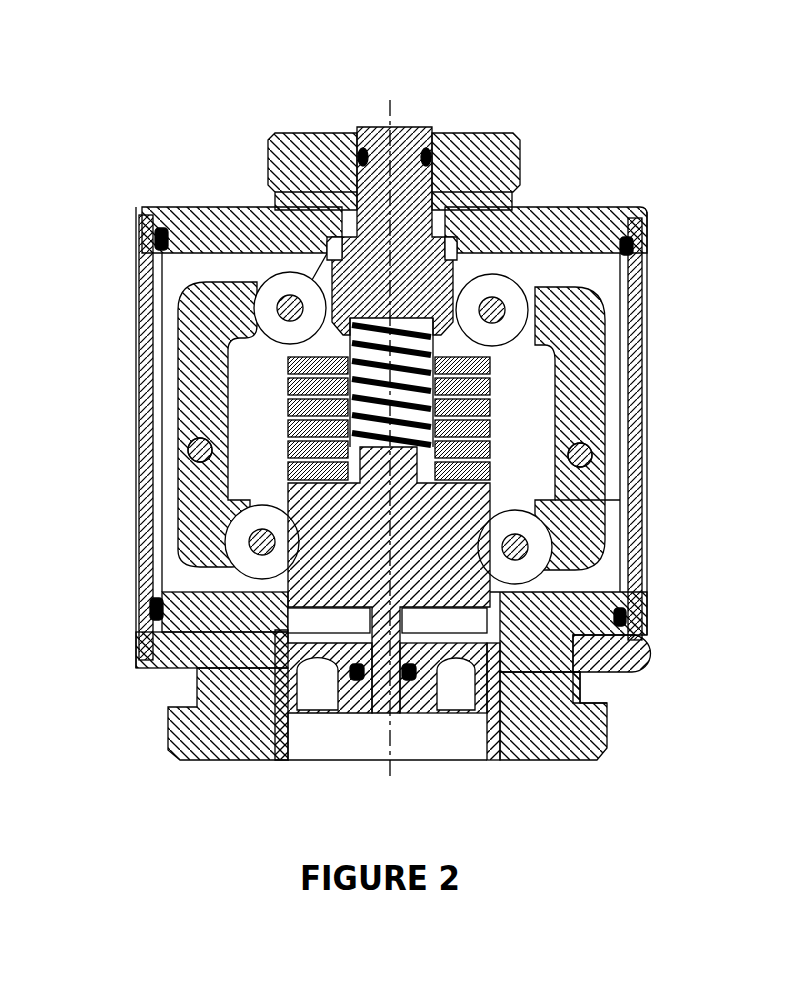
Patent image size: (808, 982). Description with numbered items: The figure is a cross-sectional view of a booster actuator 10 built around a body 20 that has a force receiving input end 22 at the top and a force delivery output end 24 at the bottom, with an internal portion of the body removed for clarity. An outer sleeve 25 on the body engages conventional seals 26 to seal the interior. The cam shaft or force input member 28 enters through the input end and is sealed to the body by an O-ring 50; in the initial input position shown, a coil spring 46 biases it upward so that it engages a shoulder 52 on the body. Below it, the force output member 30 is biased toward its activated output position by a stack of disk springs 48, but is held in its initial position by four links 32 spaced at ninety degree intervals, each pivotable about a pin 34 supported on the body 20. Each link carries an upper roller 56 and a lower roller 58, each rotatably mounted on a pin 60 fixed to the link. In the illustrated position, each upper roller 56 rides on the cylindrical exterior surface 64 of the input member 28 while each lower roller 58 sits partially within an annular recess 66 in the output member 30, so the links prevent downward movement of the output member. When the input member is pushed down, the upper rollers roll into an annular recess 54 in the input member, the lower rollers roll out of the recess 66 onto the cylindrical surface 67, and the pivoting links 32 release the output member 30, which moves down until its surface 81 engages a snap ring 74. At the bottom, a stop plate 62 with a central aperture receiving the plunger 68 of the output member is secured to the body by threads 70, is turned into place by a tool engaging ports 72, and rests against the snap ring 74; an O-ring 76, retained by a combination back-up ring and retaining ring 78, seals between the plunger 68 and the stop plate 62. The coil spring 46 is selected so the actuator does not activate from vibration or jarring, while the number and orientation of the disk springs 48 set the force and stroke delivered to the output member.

The actuator 10 is at (647, 108).
The body 20 is at (195, 207).
The force receiving input end 22 is at (610, 213).
The force delivery output end 24 is at (600, 762).
The outer sleeve 25 is at (643, 477).
The seals 26 is at (645, 623).
The force input member 28 is at (435, 188).
The force output member 30 is at (360, 564).
The links 32 is at (180, 378).
The pin 34 is at (190, 448).
The coil spring 46 is at (435, 348).
The disk springs 48 is at (484, 418).
The O-ring 50 is at (450, 133).
The shoulder 52 is at (310, 278).
The annular recess 54 is at (448, 283).
The upper roller 56 is at (253, 305).
The lower roller 58 is at (226, 542).
The pin 60 is at (530, 553).
The stop plate 62 is at (345, 712).
The cylindrical exterior surface 64 is at (497, 310).
The annular recess 66 is at (506, 547).
The cylindrical surface 67 is at (605, 500).
The plunger 68 is at (364, 674).
The threads 70 is at (305, 766).
The ports 72 is at (497, 758).
The snap ring 74 is at (280, 612).
The O-ring 76 is at (607, 723).
The back-up ring and retaining ring 78 is at (577, 683).
The surface 81 is at (136, 632).